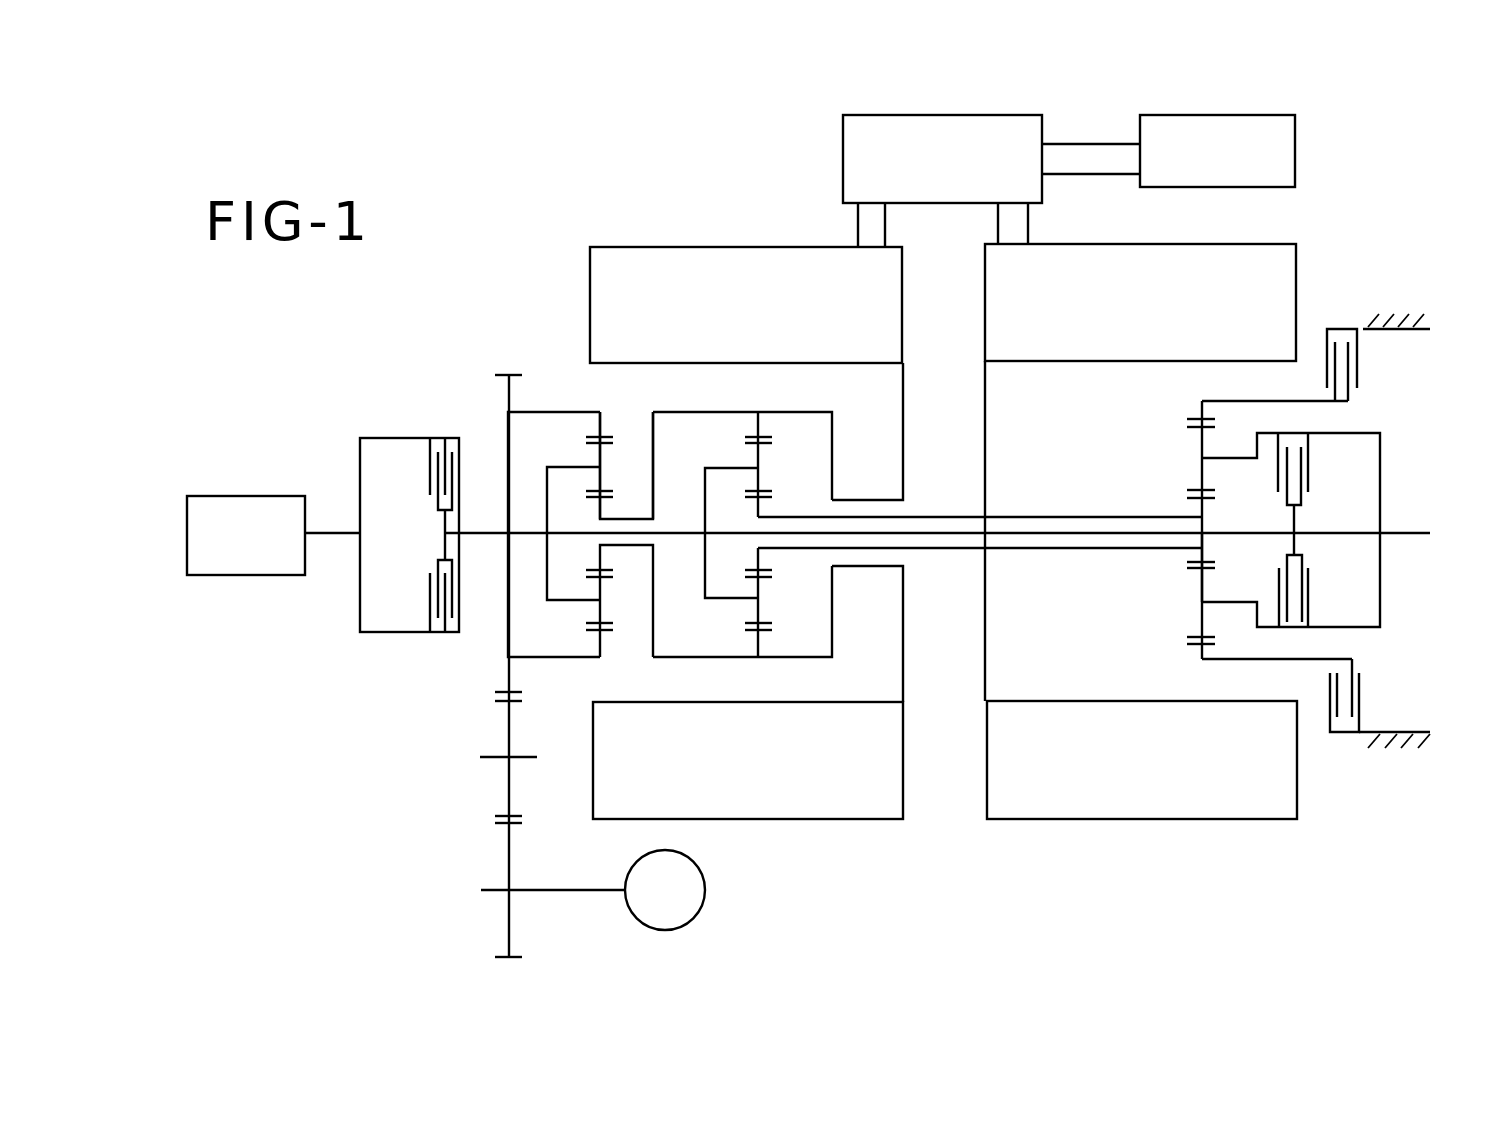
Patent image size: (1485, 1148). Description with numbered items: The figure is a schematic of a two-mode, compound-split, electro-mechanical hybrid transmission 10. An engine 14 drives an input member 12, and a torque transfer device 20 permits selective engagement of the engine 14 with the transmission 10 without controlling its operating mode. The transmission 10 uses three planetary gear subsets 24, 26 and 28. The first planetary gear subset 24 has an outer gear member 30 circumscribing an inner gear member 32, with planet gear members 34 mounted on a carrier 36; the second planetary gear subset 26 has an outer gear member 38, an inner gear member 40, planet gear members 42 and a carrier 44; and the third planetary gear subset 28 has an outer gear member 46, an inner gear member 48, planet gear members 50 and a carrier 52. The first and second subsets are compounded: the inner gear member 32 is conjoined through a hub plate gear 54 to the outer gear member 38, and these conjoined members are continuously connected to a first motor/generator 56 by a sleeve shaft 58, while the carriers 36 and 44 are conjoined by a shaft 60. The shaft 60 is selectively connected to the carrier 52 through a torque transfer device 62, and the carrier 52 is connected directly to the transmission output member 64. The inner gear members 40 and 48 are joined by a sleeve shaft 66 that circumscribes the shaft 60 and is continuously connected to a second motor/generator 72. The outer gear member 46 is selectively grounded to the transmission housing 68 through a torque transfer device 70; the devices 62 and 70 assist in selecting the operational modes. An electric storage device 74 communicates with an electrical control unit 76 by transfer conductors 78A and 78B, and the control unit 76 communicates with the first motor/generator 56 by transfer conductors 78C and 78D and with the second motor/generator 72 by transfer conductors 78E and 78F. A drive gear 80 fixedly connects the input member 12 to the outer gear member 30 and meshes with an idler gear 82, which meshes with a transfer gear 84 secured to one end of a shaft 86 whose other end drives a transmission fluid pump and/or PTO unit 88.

The hybrid transmission 10 is at (596, 198).
The input member 12 is at (483, 532).
The engine 14 is at (226, 555).
The torque transfer device 20 is at (428, 642).
The first planetary gear subset 24 is at (602, 505).
The second planetary gear subset 26 is at (742, 532).
The third planetary gear subset 28 is at (1242, 532).
The outer gear member 30 is at (612, 435).
The inner gear member 32 is at (612, 508).
The planet gear members 34 is at (590, 458).
The carrier 36 is at (547, 575).
The outer gear member 38 is at (747, 437).
The inner gear member 40 is at (753, 570).
The planet gear members 42 is at (758, 481).
The carrier 44 is at (707, 580).
The outer gear member 46 is at (1196, 416).
The inner gear member 48 is at (1208, 561).
The planet gear members 50 is at (1198, 474).
The carrier 52 is at (1355, 433).
The hub plate gear 54 is at (653, 450).
The first motor/generator 56 is at (722, 321).
The sleeve shaft 58 is at (868, 498).
The shaft 60 is at (945, 530).
The torque transfer device 62 is at (1309, 480).
The transmission output member 64 is at (1405, 528).
The sleeve shaft 66 is at (1038, 515).
The transmission housing 68 is at (1408, 325).
The torque transfer device 70 is at (1360, 365).
The second motor/generator 72 is at (1127, 321).
The electric storage device 74 is at (1202, 169).
The electrical control unit 76 is at (926, 174).
The transfer conductor 78A is at (1088, 143).
The transfer conductor 78B is at (1112, 176).
The transfer conductor 78C is at (856, 224).
The transfer conductor 78D is at (887, 232).
The transfer conductor 78E is at (996, 232).
The transfer conductor 78F is at (1030, 234).
The drive gear 80 is at (505, 608).
The idler gear 82 is at (508, 795).
The transfer gear 84 is at (508, 862).
The shaft 86 is at (576, 891).
The transmission fluid pump and/or PTO unit 88 is at (672, 885).